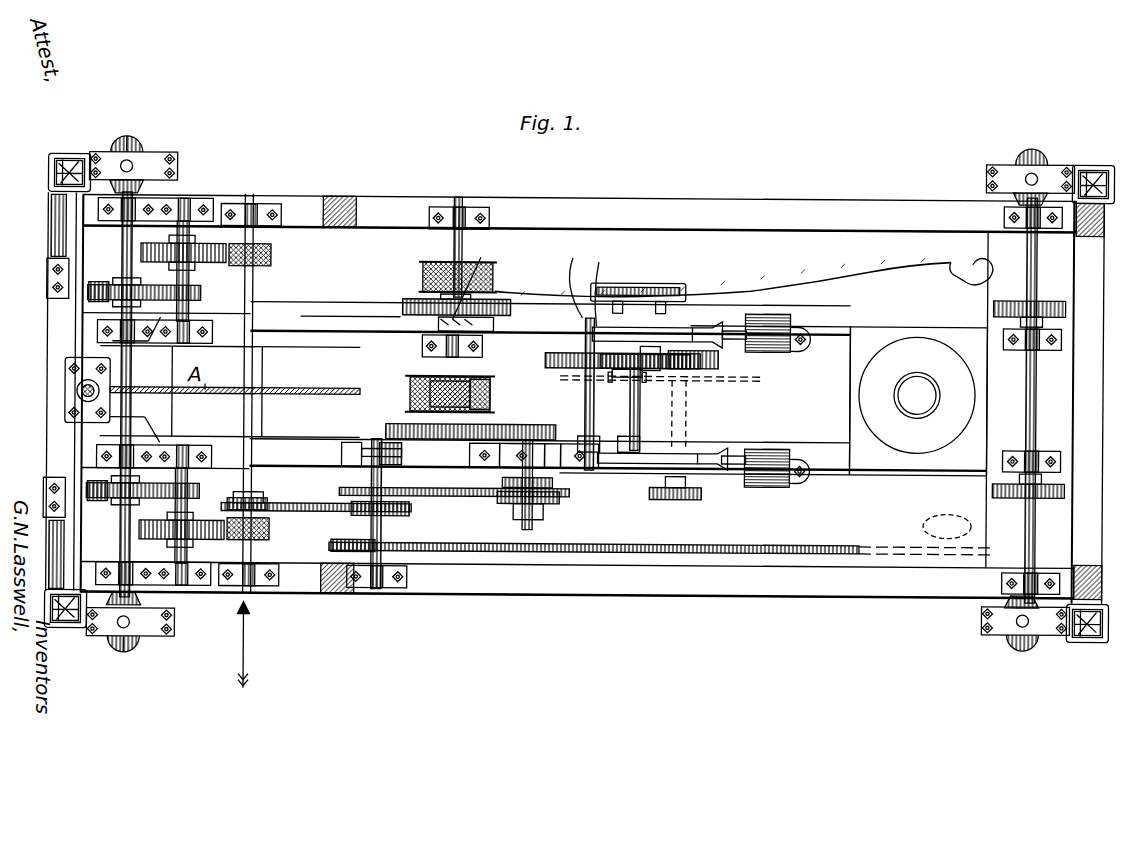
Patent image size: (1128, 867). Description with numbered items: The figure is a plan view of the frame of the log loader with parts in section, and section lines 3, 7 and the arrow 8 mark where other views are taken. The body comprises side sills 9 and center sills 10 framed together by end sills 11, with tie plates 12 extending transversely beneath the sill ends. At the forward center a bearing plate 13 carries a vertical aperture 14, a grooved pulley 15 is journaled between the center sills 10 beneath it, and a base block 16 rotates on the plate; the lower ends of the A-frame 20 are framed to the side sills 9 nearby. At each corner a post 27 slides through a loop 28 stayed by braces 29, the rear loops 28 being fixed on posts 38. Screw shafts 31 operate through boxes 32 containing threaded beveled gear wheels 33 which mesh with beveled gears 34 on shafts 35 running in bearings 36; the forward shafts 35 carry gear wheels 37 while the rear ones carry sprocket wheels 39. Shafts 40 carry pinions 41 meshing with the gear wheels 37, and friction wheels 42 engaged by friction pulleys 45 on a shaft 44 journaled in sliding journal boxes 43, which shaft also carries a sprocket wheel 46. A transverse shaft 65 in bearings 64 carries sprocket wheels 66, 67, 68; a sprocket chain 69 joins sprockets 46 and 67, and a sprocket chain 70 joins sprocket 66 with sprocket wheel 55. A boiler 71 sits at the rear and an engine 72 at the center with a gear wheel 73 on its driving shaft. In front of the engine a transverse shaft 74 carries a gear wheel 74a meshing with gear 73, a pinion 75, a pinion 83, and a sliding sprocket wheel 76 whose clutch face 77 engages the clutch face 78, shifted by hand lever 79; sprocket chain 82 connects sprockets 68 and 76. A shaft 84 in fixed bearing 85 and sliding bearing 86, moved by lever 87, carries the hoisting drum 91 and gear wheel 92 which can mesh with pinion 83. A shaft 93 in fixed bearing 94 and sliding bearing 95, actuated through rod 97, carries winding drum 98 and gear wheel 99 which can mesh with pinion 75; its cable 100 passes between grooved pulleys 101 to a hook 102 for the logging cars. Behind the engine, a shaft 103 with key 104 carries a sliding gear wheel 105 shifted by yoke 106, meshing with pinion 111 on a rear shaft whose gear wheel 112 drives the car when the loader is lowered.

The section line 3— 3 is at (125, 150).
The section line 7— 7 is at (70, 390).
The arrow 8 is at (242, 645).
The side sills 9 is at (675, 216).
The center sills 10 is at (276, 322).
The end sills 11 is at (60, 452).
The tie plates 12 is at (200, 412).
The bearing plate 13 is at (398, 306).
The aperture 14 is at (630, 382).
The grooved pulley 15 is at (78, 384).
The base block 16 is at (646, 410).
The A-frame 20 is at (338, 200).
The posts 27 is at (68, 161).
The loops 28 is at (52, 176).
The braces 29 is at (50, 242).
The screw shafts 31 is at (122, 160).
The boxes 32 is at (150, 160).
The beveled gear wheels 33 is at (138, 142).
The beveled gears 34 is at (132, 190).
The shafts 35 is at (121, 264).
The bearings 36 is at (98, 324).
The gear wheel 37 is at (82, 298).
The posts 38 is at (1074, 238).
The sprocket wheels 39 is at (1042, 310).
The shafts 40 is at (192, 300).
The pinions 41 is at (190, 290).
The friction wheels 42 is at (142, 252).
The journal boxes 43 is at (244, 208).
The shaft 44 is at (254, 366).
The friction pulleys 45 is at (272, 252).
The sprocket wheel 46 is at (252, 506).
The sprocket wheel 55 is at (992, 540).
The bearings 64 is at (378, 590).
The shaft 65 is at (384, 530).
The sprocket wheel 66 is at (354, 542).
The sprocket wheel 67 is at (410, 510).
The sprocket wheel 68 is at (366, 494).
The sprocket chain 69 is at (318, 504).
The sprocket chain 70 is at (680, 544).
The boiler 71 is at (917, 395).
The engine 72 is at (773, 401).
The gear wheel 73 is at (596, 272).
The transverse shaft 74 is at (584, 388).
The gear wheel 74a is at (568, 271).
The pinion 75 is at (576, 346).
The sprocket wheel 76 is at (560, 500).
The clutch face 77 is at (548, 510).
The clutch face 78 is at (546, 526).
The hand lever 79 is at (556, 484).
The sprocket chain 82 is at (486, 498).
The pinion 83 is at (486, 400).
The shaft 84 is at (448, 364).
The fixed bearing 85 is at (438, 352).
The sliding bearing 86 is at (470, 468).
The lever 87 is at (420, 470).
The drum 91 is at (440, 388).
The gear wheel 92 is at (384, 430).
The shaft 93 is at (450, 242).
The fixed bearing 94 is at (456, 210).
The sliding bearing 95 is at (482, 258).
The rod 97 is at (454, 310).
The winding drum 98 is at (422, 262).
The gear wheel 99 is at (412, 304).
The cable 100 is at (760, 294).
The grooved pulleys 101 is at (626, 286).
The hook 102 is at (960, 278).
The shaft 103 is at (640, 432).
The key 104 is at (608, 404).
The gear wheel 105 is at (644, 352).
The yoke 106 is at (650, 378).
The pinion 111 is at (694, 350).
The gear wheel 112 is at (692, 498).